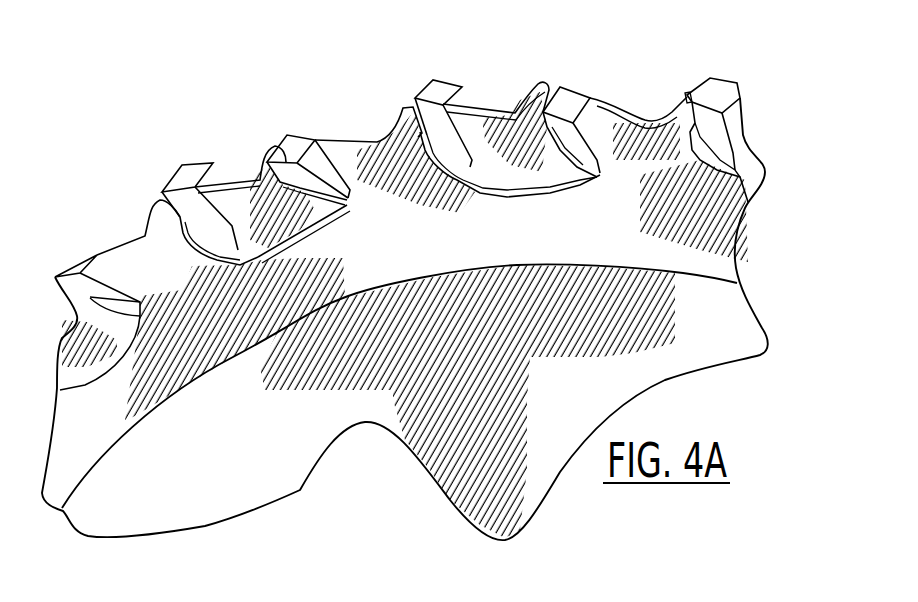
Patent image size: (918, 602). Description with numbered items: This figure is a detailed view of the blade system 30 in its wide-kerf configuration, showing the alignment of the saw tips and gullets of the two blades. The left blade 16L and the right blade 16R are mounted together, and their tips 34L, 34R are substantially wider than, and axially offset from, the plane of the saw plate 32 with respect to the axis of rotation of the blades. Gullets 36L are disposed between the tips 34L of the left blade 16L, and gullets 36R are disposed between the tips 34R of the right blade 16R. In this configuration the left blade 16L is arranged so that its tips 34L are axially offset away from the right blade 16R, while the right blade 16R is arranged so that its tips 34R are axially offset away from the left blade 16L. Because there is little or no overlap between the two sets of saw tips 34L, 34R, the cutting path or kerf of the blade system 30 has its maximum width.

The blade system 30 is at (118, 131).
The saw plate 32 is at (601, 233).
The left-directed blade member 16L is at (228, 446).
The right-directed blade member 16R is at (502, 150).
The saw tips 34L is at (223, 155).
The saw tips 34R is at (443, 90).
The gullets 36L is at (300, 237).
The gullets 36R is at (262, 143).